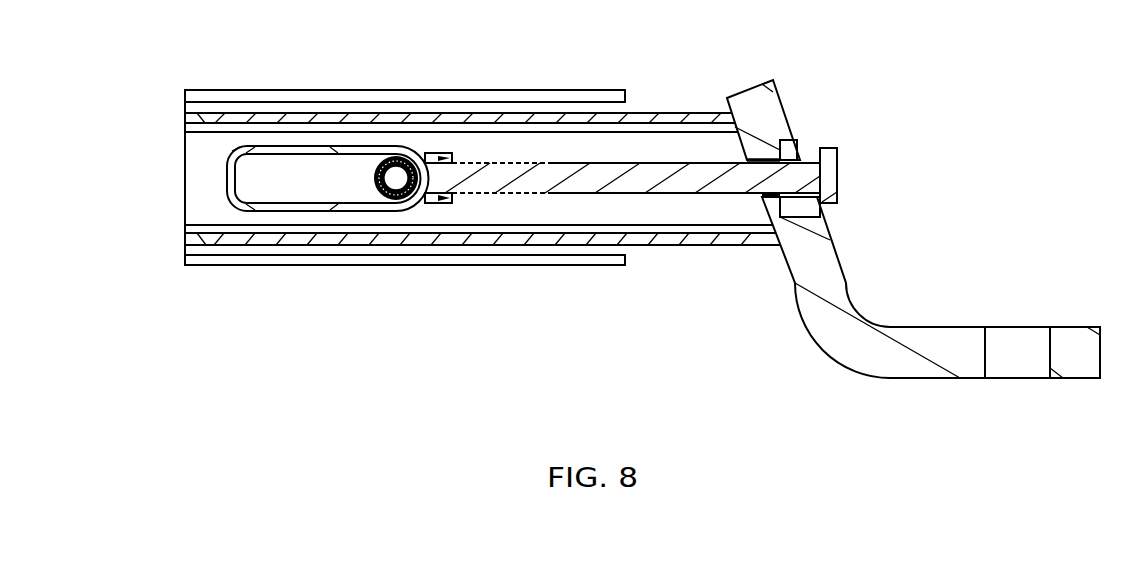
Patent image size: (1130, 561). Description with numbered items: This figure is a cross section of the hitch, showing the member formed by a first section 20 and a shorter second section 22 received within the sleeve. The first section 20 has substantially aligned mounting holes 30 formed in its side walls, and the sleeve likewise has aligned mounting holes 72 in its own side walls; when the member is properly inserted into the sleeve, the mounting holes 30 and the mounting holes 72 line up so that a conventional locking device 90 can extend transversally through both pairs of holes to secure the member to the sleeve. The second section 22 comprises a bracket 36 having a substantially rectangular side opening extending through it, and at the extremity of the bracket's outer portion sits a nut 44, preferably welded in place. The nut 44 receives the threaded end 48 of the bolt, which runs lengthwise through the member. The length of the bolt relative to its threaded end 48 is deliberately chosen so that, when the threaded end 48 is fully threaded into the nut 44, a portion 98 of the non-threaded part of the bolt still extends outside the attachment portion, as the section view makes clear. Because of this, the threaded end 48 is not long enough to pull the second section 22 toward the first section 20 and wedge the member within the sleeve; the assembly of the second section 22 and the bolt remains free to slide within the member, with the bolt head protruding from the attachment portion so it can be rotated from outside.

The first section 20 is at (663, 112).
The second section 22 is at (213, 237).
The bracket 36 is at (295, 143).
The mounting holes 30 is at (413, 181).
The mounting holes 72 is at (413, 181).
The locking device 90 is at (393, 183).
The nut 44 is at (443, 205).
The threaded end 48 is at (513, 195).
The portion 98 is at (803, 148).